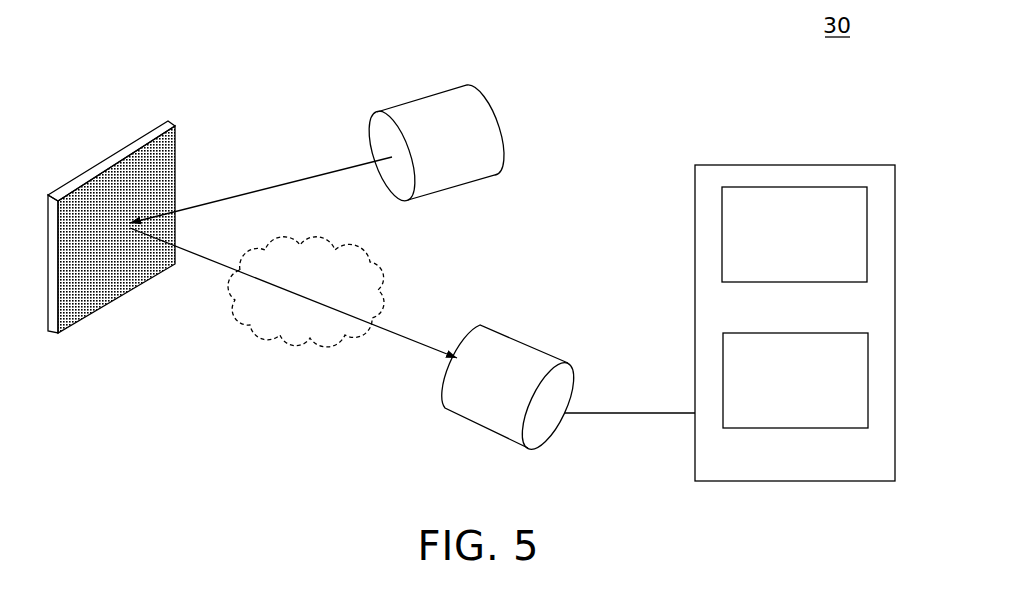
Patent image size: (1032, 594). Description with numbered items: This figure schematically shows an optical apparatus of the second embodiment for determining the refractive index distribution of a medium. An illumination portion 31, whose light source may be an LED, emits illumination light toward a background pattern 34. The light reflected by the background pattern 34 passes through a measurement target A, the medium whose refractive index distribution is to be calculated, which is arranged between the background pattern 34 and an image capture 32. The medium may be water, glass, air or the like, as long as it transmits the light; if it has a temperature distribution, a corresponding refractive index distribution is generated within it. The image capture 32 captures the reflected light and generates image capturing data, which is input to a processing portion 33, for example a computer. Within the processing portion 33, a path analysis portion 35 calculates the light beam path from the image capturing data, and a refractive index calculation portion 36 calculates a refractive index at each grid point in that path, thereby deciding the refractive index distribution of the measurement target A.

The illumination portion 31 is at (490, 110).
The image capture 32 is at (518, 338).
The processing portion 33 is at (792, 164).
The background pattern 34 is at (108, 158).
The path analysis portion 35 is at (832, 282).
The refractive index calculation portion 36 is at (832, 429).
The measurement target A is at (278, 340).